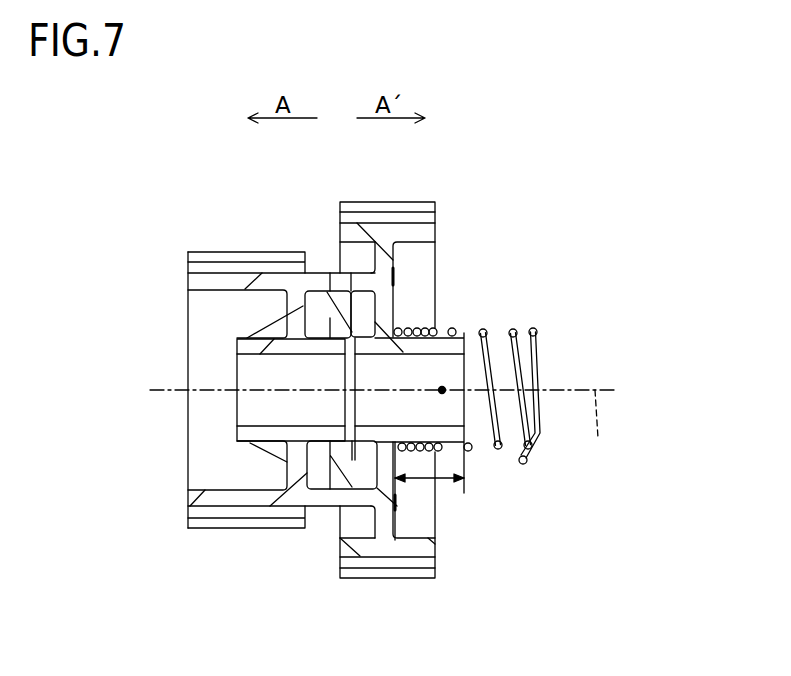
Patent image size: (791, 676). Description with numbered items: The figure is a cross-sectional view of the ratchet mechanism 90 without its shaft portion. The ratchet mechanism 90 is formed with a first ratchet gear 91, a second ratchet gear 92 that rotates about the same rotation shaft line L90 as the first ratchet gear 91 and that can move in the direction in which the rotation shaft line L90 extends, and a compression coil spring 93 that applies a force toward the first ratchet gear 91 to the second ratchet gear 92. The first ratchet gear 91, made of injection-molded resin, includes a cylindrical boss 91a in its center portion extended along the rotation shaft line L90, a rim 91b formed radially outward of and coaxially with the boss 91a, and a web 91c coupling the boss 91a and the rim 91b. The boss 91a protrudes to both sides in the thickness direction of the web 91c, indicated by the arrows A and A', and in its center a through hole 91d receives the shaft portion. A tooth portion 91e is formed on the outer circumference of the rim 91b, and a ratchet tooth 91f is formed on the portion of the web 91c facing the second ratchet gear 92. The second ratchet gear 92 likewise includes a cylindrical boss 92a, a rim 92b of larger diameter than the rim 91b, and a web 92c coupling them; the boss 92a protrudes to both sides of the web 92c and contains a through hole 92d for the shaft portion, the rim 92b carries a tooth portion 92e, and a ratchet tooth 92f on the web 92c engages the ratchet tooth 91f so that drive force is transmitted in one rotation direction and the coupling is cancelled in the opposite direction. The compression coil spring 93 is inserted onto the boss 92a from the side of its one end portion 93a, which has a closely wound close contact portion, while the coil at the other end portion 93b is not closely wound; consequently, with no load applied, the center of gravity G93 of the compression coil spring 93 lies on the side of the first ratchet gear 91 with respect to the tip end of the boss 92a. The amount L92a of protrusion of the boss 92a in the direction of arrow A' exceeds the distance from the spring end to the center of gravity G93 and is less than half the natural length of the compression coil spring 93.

The ratchet mechanism 90 is at (628, 168).
The first ratchet gear 91 is at (262, 295).
The cylindrical boss 91a is at (250, 344).
The rim 91b is at (213, 280).
The web 91c is at (290, 311).
The through hole 91d is at (252, 408).
The tooth portion 91e is at (213, 528).
The ratchet tooth 91f is at (317, 497).
The second ratchet gear 92 is at (407, 248).
The cylindrical boss 92a is at (447, 347).
The rim 92b is at (420, 233).
The web 92c is at (393, 260).
The through hole 92d is at (415, 403).
The tooth portion 92e is at (417, 562).
The ratchet tooth 92f is at (362, 502).
The compression coil spring 93 is at (535, 360).
The one end portion 93a is at (398, 330).
The other end portion 93b is at (535, 330).
The center of gravity G93 is at (442, 390).
The rotation shaft line L90 is at (596, 432).
The amount of protrusion L92a is at (443, 480).